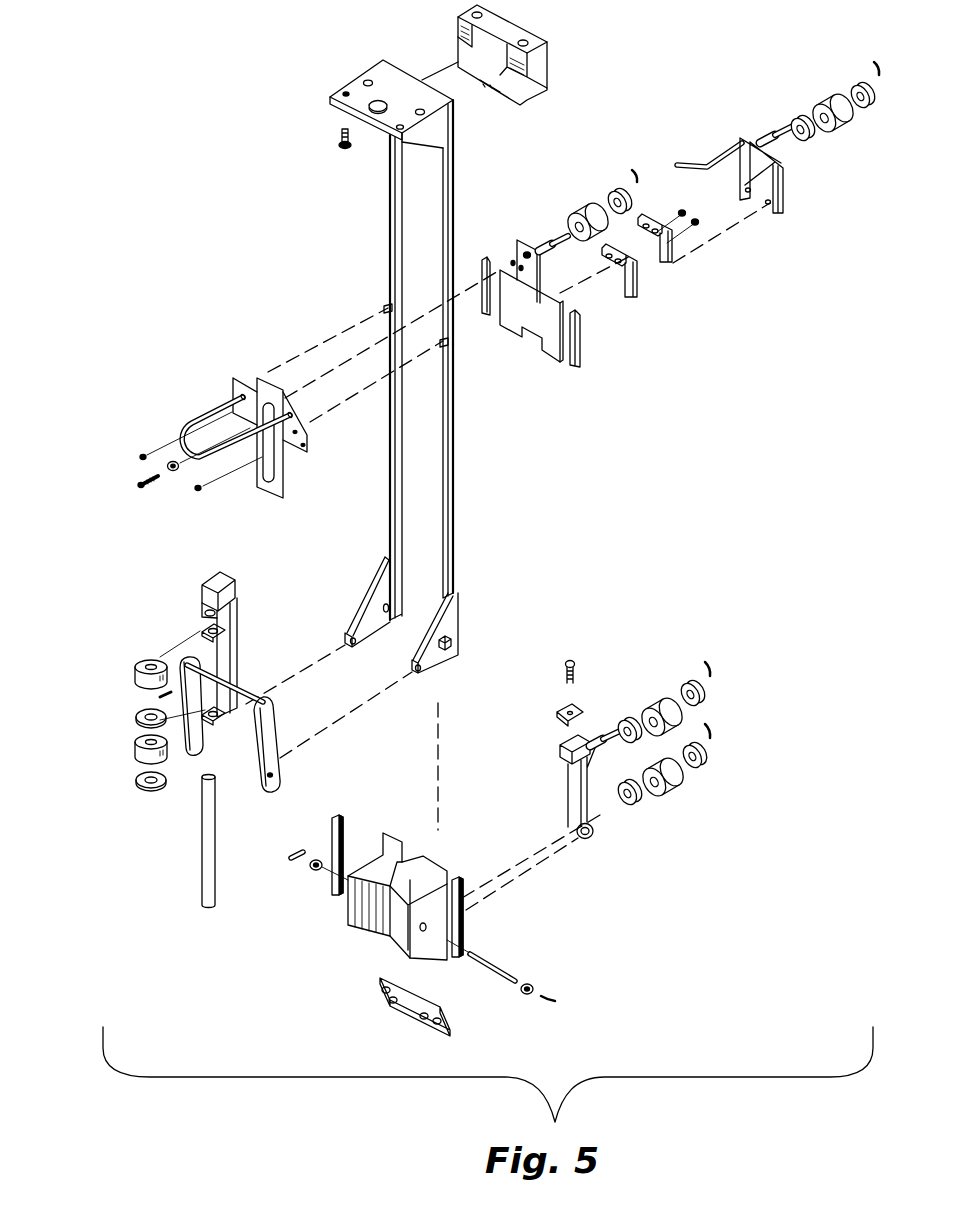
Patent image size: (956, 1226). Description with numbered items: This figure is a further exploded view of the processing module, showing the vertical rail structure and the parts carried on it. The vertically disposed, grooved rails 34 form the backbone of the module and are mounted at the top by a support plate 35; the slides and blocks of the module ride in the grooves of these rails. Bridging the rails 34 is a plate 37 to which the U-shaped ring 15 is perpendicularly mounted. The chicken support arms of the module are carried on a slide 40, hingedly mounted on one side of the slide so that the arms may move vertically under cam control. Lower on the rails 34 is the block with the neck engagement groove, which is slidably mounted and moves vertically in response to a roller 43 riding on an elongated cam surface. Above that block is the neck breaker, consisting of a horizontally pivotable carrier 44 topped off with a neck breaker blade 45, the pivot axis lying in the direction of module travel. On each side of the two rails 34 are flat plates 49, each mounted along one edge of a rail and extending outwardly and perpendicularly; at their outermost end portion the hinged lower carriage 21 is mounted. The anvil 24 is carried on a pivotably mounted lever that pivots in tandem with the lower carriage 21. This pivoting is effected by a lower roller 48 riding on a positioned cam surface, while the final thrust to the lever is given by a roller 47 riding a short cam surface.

The U-shaped ring 15 is at (203, 418).
The hinged lower carriage 21 is at (273, 722).
The anvil 24 is at (232, 584).
The rails 34 is at (453, 457).
The support plate 35 is at (398, 73).
The plate 37 is at (298, 446).
The slide 40 is at (543, 350).
The roller 43 is at (667, 790).
The carrier 44 is at (570, 781).
The neck breaker blade 45 is at (570, 707).
The roller 47 is at (132, 685).
The roller 48 is at (130, 757).
The flat plates 49 is at (457, 628).